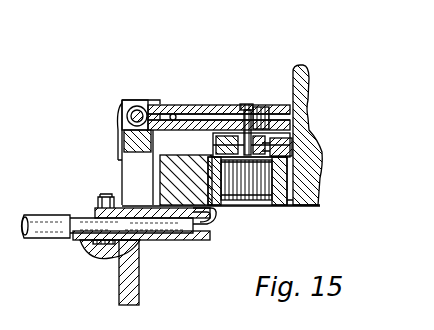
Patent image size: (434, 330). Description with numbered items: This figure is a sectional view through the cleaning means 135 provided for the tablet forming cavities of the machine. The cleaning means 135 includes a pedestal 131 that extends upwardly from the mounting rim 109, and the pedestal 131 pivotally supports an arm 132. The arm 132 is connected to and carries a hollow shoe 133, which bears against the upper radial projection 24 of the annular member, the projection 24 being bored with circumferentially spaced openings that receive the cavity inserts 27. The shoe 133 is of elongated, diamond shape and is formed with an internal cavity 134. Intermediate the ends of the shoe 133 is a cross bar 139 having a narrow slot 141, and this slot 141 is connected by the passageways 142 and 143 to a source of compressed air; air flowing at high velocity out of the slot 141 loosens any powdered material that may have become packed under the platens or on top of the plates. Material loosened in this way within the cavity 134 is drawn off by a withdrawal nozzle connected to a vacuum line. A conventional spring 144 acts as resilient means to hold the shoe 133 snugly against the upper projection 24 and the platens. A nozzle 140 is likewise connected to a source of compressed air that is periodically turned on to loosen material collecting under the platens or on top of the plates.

The cleaning means 135 is at (120, 88).
The internal cavity 134 is at (288, 142).
The cross bar 139 is at (283, 149).
The narrow slot 141 is at (304, 166).
The cavity inserts 27 is at (300, 206).
The arm 132 is at (188, 108).
The passageway 143 is at (200, 113).
The spring 144 is at (172, 102).
The pedestal 131 is at (126, 146).
The upper radial projection 24 is at (188, 154).
The passageway 142 is at (247, 104).
The hollow shoe 133 is at (225, 140).
The nozzle 140 is at (215, 213).
The mounting rim 109 is at (100, 249).